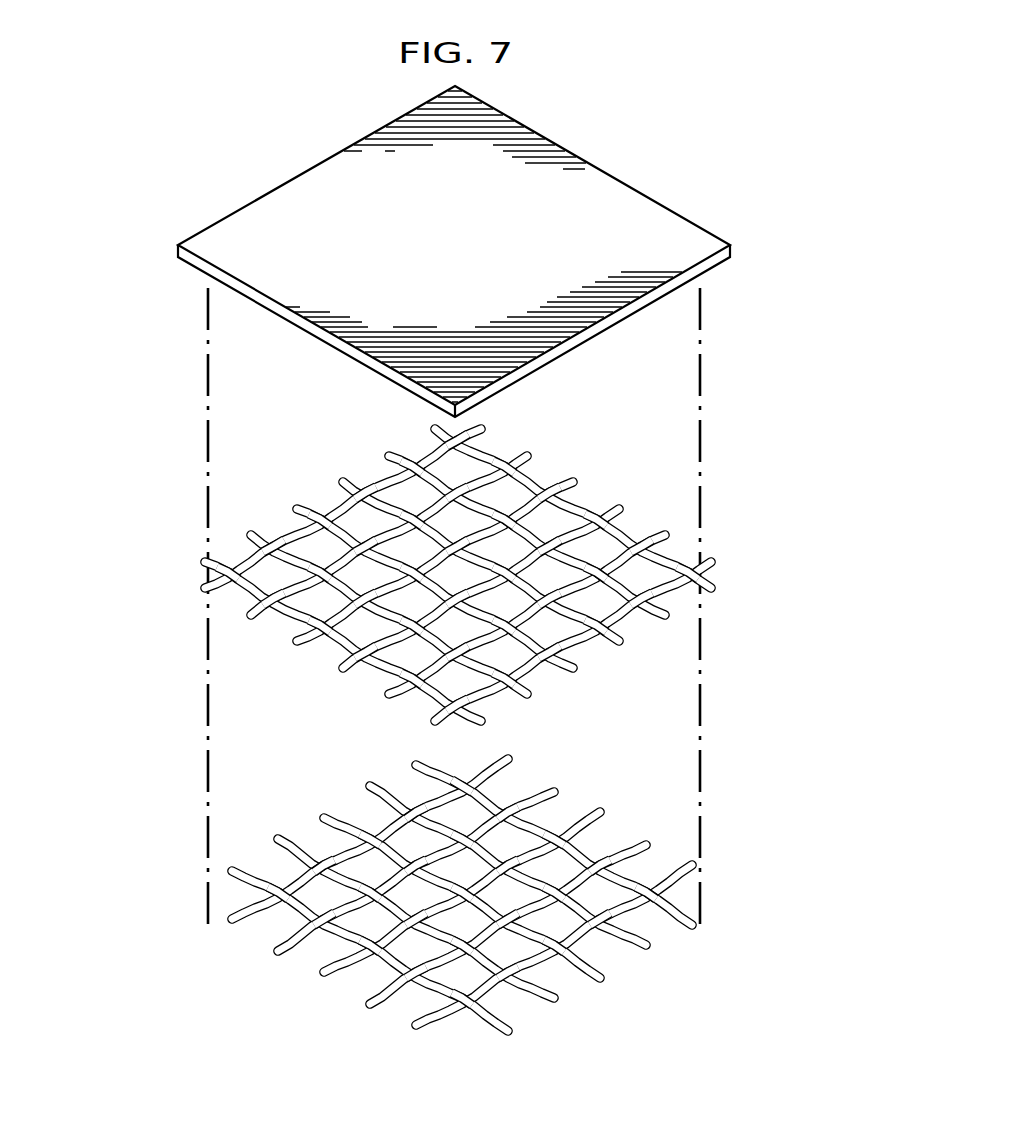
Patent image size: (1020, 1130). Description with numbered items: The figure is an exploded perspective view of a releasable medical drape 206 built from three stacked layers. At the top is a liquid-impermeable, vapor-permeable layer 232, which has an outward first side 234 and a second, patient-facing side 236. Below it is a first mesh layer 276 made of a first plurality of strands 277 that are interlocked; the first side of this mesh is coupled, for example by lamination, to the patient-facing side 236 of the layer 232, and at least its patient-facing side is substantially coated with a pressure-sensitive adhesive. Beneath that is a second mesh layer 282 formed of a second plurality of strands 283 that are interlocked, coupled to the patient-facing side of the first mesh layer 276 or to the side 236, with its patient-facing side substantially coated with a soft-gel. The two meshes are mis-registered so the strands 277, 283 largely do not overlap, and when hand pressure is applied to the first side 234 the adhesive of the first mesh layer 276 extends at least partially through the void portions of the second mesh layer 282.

The releasable medical drape 206 is at (96, 223).
The liquid-impermeable, vapor-permeable layer 232 is at (647, 120).
The first side 234 is at (675, 222).
The second, patient-facing side 236 is at (653, 305).
The first mesh layer 276 is at (308, 453).
The first plurality of strands 277 is at (208, 572).
The second mesh layer 282 is at (290, 773).
The second plurality of strands 283 is at (245, 923).